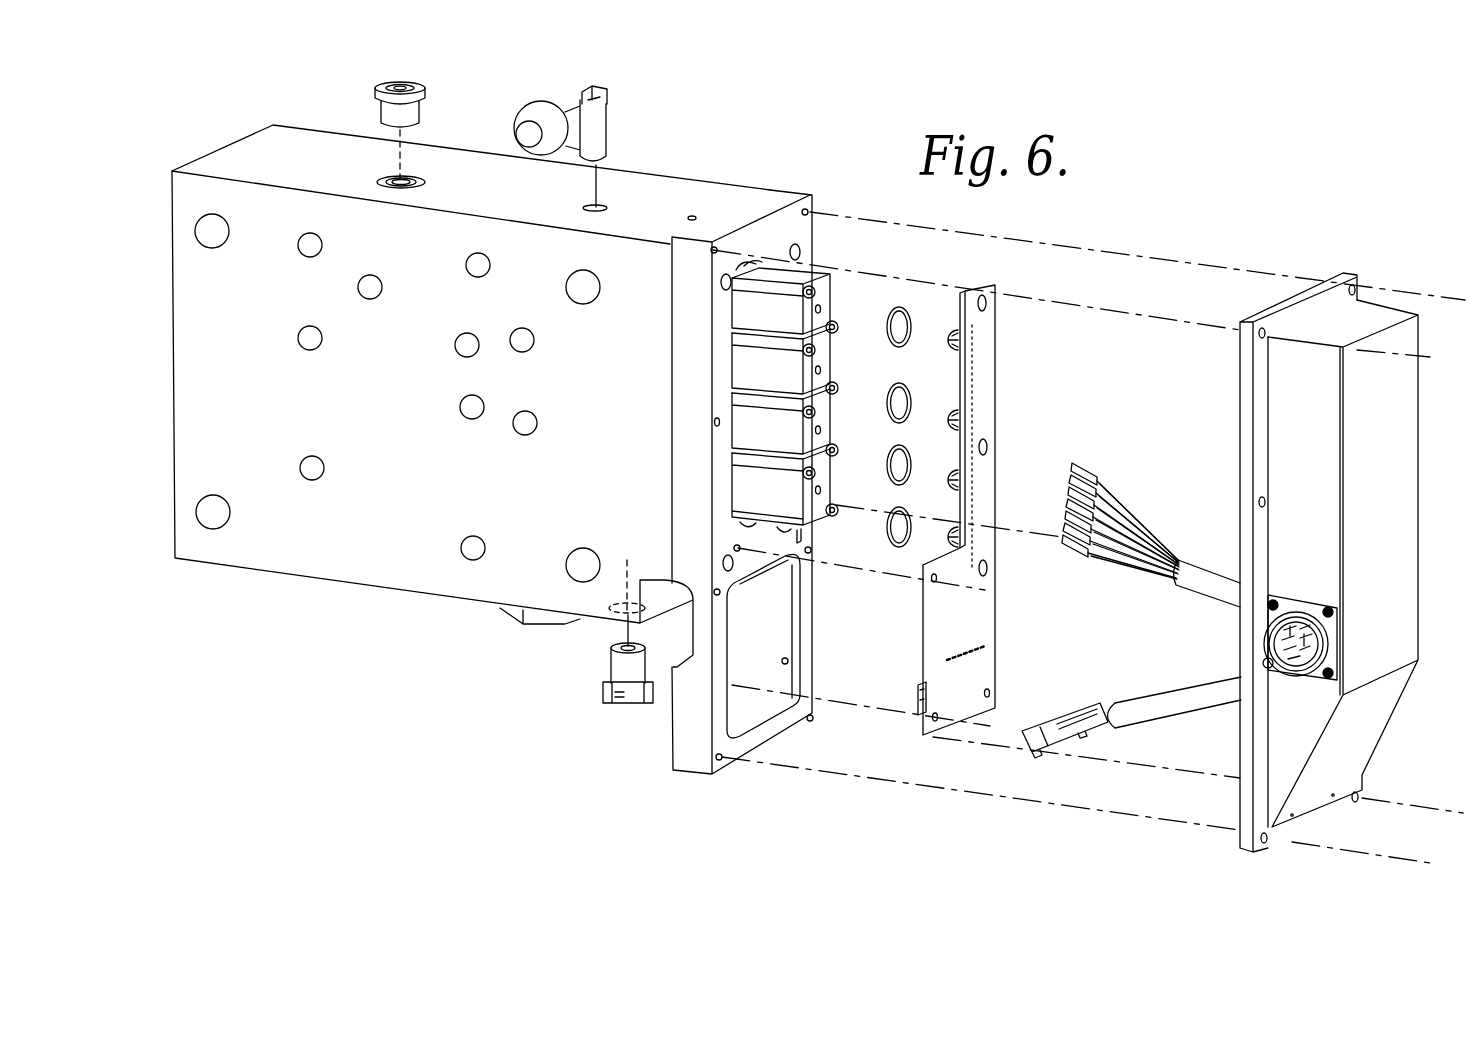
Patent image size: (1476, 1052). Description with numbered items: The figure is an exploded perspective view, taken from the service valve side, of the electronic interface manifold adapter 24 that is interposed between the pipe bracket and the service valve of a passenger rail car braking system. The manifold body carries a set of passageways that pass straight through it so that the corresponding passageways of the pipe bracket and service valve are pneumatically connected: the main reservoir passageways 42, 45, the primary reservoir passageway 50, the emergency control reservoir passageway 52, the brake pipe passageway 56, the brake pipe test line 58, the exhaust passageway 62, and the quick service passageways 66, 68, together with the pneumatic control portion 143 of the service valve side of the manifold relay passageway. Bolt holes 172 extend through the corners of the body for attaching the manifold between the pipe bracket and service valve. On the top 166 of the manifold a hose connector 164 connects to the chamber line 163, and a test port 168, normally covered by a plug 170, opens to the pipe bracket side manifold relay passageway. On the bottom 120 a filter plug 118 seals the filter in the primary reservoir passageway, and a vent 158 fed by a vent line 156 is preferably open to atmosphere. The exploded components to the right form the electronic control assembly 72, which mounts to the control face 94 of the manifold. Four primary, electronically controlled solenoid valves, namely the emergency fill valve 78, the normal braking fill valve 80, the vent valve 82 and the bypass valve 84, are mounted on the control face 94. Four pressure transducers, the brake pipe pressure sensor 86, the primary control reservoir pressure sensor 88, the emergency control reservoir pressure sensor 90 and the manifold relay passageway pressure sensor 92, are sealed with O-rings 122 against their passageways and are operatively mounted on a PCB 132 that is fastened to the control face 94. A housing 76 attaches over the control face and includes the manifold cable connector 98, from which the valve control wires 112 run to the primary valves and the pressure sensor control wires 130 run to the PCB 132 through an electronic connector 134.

The electronic interface manifold adapter 24 is at (735, 165).
The main reservoir passageway 42 is at (472, 266).
The second main reservoir passageway 45 is at (306, 247).
The primary reservoir passageway 50 is at (525, 423).
The emergency control reservoir passageway 52 is at (308, 472).
The brake pipe passageway 56 is at (470, 548).
The brake pipe test line 58 is at (465, 347).
The exhaust passageway 62 is at (472, 410).
The quick service passageway 66 is at (306, 342).
The quick service passageway 68 is at (524, 340).
The electronic control assembly 72 is at (1113, 292).
The housing 76 is at (1383, 488).
The emergency fill valve 78 is at (775, 292).
The normal braking fill valve 80 is at (778, 362).
The vent valve 82 is at (780, 430).
The bypass valve 84 is at (778, 485).
The brake pipe pressure sensor 86 is at (965, 421).
The primary control reservoir pressure sensor 88 is at (965, 479).
The emergency control reservoir pressure sensor 90 is at (965, 536).
The manifold relay passageway pressure sensor 92 is at (965, 343).
The control face 94 is at (787, 228).
The manifold cable connector 98 is at (1318, 645).
The valve control wires 112 is at (1154, 505).
The filter plug 118 is at (535, 625).
The bottom 120 is at (290, 578).
The O-rings 122 is at (910, 338).
The pressure sensor control wires 130 is at (1135, 707).
The PCB 132 is at (975, 632).
The electronic connector 134 is at (920, 717).
The pneumatic control portion 143 is at (370, 287).
The vent line 156 is at (634, 579).
The vent 158 is at (633, 698).
The chamber line 163 is at (604, 208).
The hose connector 164 is at (590, 106).
The top 166 is at (293, 157).
The test port 168 is at (413, 177).
The plug 170 is at (410, 114).
The bolt holes 172 is at (210, 235).